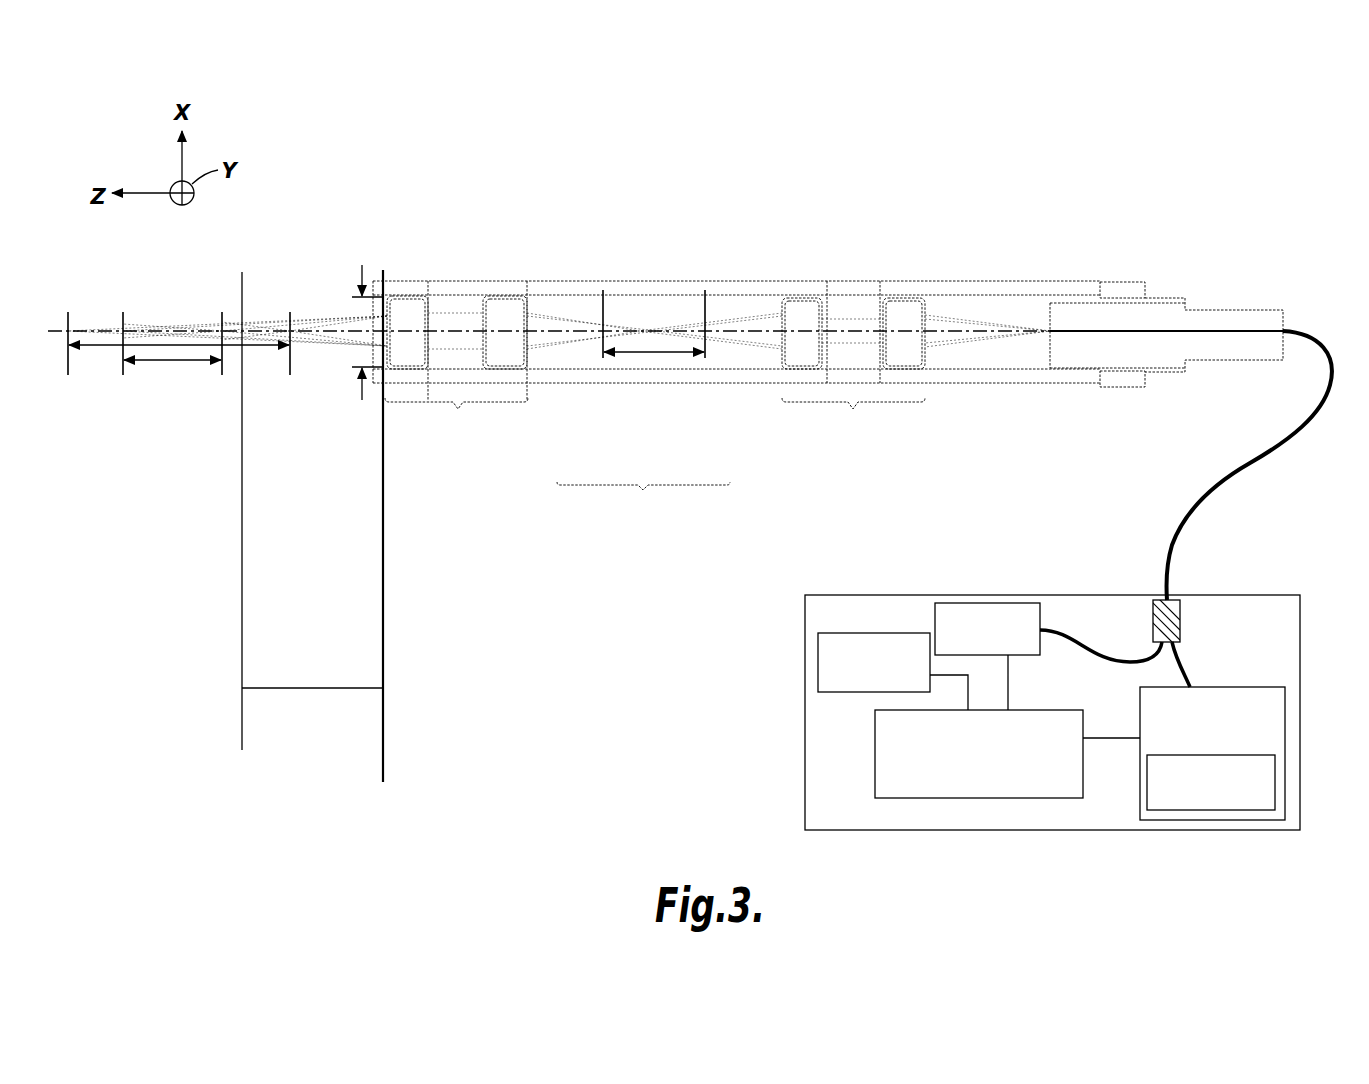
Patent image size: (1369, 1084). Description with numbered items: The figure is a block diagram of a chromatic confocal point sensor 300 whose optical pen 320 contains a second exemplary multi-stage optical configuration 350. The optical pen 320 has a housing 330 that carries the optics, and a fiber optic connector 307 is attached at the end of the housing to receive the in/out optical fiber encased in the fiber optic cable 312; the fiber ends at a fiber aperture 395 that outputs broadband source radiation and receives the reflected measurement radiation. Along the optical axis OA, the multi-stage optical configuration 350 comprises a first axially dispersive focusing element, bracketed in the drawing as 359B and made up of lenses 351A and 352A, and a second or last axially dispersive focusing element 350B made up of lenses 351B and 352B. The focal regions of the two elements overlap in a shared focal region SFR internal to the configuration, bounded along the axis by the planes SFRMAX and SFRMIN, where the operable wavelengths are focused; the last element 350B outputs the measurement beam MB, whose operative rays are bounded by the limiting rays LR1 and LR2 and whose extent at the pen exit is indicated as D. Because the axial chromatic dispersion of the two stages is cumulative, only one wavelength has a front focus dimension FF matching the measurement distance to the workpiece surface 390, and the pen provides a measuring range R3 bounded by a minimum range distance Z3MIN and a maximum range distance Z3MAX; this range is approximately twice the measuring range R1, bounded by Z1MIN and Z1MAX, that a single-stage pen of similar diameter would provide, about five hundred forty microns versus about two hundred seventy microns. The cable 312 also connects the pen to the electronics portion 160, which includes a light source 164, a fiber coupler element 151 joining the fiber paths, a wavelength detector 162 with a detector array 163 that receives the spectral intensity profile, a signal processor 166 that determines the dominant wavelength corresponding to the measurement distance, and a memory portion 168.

The chromatic confocal point sensor 300 is at (1135, 407).
The fiber optic connector 307 is at (1177, 296).
The optical fiber cable 312 is at (1302, 333).
The optical pen 320 is at (1085, 465).
The housing 330 is at (1057, 281).
The multi-stage optical configuration 350 is at (643, 501).
The second (or last) axially dispersive focusing element 350B is at (853, 409).
The lens group 359B is at (458, 409).
The lens 351A is at (905, 298).
The lens 351B is at (505, 295).
The lens 352A is at (800, 298).
The lens 352B is at (402, 295).
The workpiece surface 390 is at (242, 575).
The fiber aperture 395 is at (1052, 333).
The first lens 151 is at (1182, 610).
The electronics portion 160 is at (1115, 595).
The wavelength detector 162 is at (1268, 687).
The detector array 163 is at (1162, 810).
The light source 164 is at (1042, 613).
The signal processor 166 is at (1080, 708).
The memory portion 168 is at (880, 633).
The measurement beam MB is at (325, 323).
The aperture diameter D is at (360, 392).
The front focus dimension FF is at (290, 690).
The optical axis OA is at (933, 335).
The limiting ray LR1 is at (968, 323).
The limiting ray LR2 is at (957, 347).
The shared focal region SFR is at (657, 338).
The plane SFRMAX is at (607, 317).
The plane SFRMIN is at (705, 317).
The minimum range distance Z1MIN is at (220, 316).
The maximum range distance Z1MAX is at (125, 318).
The minimum range distance Z3MIN is at (295, 363).
The maximum range distance Z3MAX is at (72, 355).
The measuring range R1 is at (150, 362).
The measuring range R3 is at (235, 348).